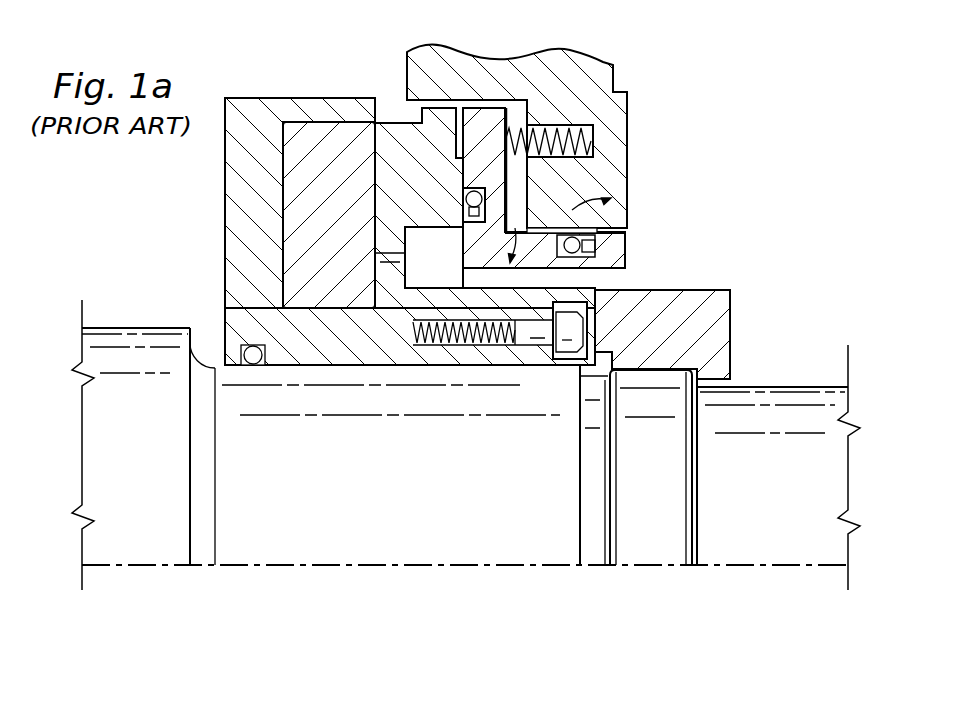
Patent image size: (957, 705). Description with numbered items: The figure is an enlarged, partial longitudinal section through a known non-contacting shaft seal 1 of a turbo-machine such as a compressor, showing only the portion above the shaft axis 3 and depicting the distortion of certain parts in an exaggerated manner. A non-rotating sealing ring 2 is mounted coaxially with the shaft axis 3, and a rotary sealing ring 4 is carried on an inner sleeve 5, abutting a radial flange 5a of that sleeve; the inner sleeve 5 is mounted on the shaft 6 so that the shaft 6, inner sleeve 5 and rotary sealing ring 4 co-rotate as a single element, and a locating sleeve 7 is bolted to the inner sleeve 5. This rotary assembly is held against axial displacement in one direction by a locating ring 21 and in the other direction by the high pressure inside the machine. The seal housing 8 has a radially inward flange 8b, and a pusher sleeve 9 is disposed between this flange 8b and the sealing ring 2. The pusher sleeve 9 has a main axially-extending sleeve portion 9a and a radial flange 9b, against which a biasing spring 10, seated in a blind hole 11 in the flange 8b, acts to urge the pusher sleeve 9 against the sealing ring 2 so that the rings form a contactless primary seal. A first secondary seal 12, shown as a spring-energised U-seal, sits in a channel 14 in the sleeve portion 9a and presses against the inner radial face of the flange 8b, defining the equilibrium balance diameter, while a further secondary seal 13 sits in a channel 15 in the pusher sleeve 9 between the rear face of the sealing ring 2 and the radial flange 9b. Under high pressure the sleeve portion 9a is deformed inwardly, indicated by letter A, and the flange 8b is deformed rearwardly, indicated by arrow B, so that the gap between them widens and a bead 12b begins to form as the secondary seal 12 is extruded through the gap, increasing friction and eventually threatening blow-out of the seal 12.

The shaft seal 1 is at (748, 186).
The sealing ring 2 is at (396, 121).
The shaft axis 3 is at (380, 565).
The rotary sealing ring 4 is at (336, 128).
The inner sleeve 5 is at (225, 187).
The radial flange 5a is at (237, 243).
The shaft 6 is at (135, 327).
The locating sleeve 7 is at (386, 283).
The seal housing 8 is at (407, 52).
The radially inward flange 8b is at (617, 165).
The pusher sleeve 9 is at (610, 265).
The main axially-extending sleeve portion 9a is at (537, 240).
The radial flange 9b is at (483, 138).
The biasing spring 10 is at (603, 110).
The blind hole 11 is at (537, 125).
The first secondary seal 12 is at (572, 247).
The bead 12b is at (597, 226).
The further secondary seal 13 is at (475, 190).
The channel 14 is at (550, 262).
The channel 15 is at (476, 230).
The locating ring 21 is at (735, 303).
The torsional deformation A is at (501, 245).
The arrow B is at (591, 193).